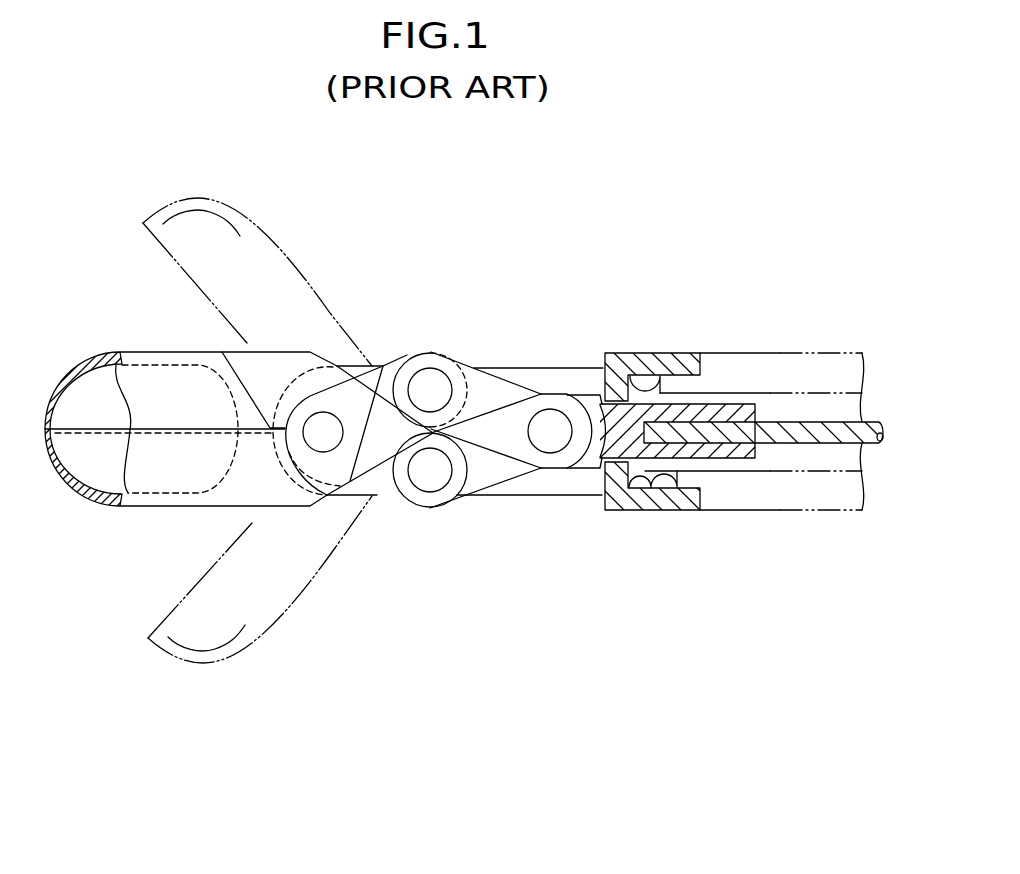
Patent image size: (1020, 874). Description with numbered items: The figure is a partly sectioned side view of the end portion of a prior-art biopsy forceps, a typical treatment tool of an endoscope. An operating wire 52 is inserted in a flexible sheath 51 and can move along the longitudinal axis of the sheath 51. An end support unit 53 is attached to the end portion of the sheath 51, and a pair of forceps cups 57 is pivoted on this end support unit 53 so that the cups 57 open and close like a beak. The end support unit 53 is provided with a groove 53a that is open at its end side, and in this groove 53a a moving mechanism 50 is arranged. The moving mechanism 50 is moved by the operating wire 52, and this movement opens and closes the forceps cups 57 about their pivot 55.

The moving mechanism 50 is at (490, 366).
The flexible sheath 51 is at (817, 368).
The operating wire 52 is at (818, 444).
The end support unit 53 is at (600, 520).
The groove 53a is at (552, 495).
The pivot pin 55 is at (328, 412).
The forceps cups 57 is at (85, 366).